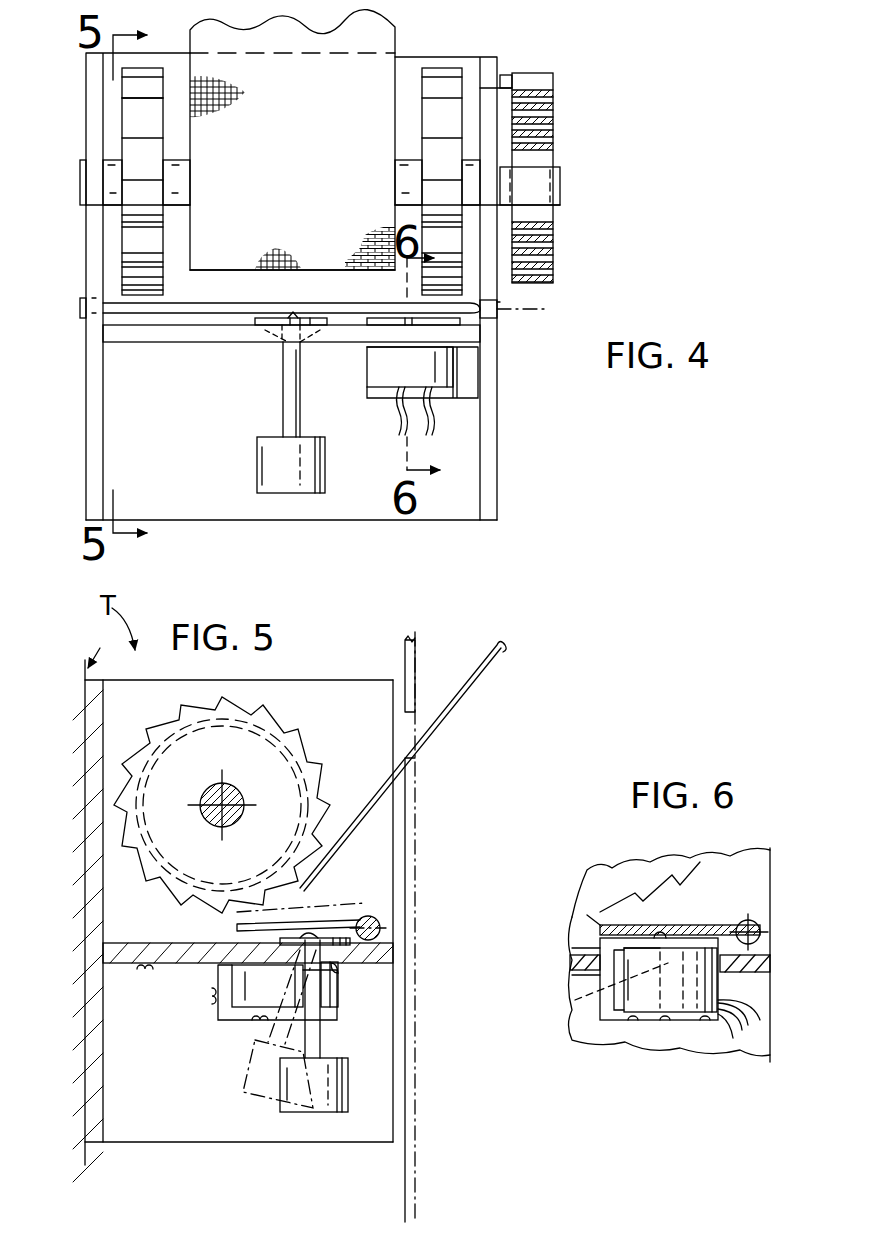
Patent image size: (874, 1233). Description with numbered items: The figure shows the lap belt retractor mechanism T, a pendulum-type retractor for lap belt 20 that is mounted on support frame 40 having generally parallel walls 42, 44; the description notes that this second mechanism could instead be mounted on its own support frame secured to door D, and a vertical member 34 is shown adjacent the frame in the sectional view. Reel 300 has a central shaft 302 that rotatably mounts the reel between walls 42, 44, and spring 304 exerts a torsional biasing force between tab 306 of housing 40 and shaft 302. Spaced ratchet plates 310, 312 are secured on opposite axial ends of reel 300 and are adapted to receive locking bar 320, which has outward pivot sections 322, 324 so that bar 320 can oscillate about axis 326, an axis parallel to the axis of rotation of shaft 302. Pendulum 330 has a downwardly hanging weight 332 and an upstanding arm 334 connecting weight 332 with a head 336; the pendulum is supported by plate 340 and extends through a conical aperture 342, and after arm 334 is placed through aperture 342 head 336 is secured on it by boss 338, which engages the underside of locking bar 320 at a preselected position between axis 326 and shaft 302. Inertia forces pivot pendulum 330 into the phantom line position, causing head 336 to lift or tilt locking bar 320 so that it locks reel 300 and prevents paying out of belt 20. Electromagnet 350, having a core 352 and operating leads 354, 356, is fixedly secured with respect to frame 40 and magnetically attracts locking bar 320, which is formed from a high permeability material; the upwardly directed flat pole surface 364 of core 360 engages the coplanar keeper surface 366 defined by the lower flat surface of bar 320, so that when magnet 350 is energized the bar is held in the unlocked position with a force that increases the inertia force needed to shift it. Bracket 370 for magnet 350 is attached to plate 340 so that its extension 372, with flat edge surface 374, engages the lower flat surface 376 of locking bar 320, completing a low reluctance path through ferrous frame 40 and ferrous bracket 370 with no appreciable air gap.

In FIG. 4, the lap belt 20 is at (394, 30).
In FIG. 5, the lap belt 20 is at (460, 680).
In FIG. 5, the vertical support member 34 is at (412, 760).
In FIG. 4, the support frame 40 is at (499, 500).
In FIG. 5, the support frame 40 is at (292, 682).
In FIG. 4, the wall 42 is at (495, 420).
In FIG. 5, the wall 42 is at (345, 682).
In FIG. 4, the wall 44 is at (100, 418).
In FIG. 4, the reel 300 is at (394, 82).
In FIG. 5, the reel 300 is at (172, 715).
In FIG. 4, the central shaft 302 is at (182, 183).
In FIG. 5, the central shaft 302 is at (208, 798).
In FIG. 4, the spring 304 is at (553, 127).
In FIG. 4, the tab 306 is at (505, 73).
In FIG. 4, the ratchet plate 310 is at (428, 158).
In FIG. 6, the ratchet plate 310 is at (697, 870).
In FIG. 4, the ratchet plate 312 is at (152, 126).
In FIG. 5, the ratchet plate 312 is at (303, 735).
In FIG. 4, the locking bar 320 is at (330, 310).
In FIG. 5, the locking bar 320 is at (237, 930).
In FIG. 6, the locking bar 320 is at (708, 928).
In FIG. 4, the outward pivot section 322 is at (500, 315).
In FIG. 4, the outward pivot section 324 is at (82, 310).
In FIG. 4, the axis 326 is at (540, 310).
In FIG. 5, the axis 326 is at (378, 920).
In FIG. 6, the axis 326 is at (762, 928).
In FIG. 4, the pendulum 330 is at (283, 402).
In FIG. 5, the pendulum 330 is at (322, 1040).
In FIG. 4, the weight 332 is at (305, 485).
In FIG. 5, the weight 332 is at (305, 1108).
In FIG. 4, the arm 334 is at (293, 378).
In FIG. 5, the arm 334 is at (328, 998).
In FIG. 4, the head 336 is at (273, 323).
In FIG. 5, the head 336 is at (330, 938).
In FIG. 4, the boss 338 is at (292, 316).
In FIG. 5, the boss 338 is at (310, 936).
In FIG. 4, the plate 340 is at (203, 345).
In FIG. 5, the plate 340 is at (190, 965).
In FIG. 6, the plate 340 is at (752, 968).
In FIG. 4, the conical aperture 342 is at (275, 355).
In FIG. 5, the conical aperture 342 is at (340, 972).
In FIG. 4, the electromagnet 350 is at (462, 372).
In FIG. 5, the electromagnet 350 is at (262, 1000).
In FIG. 6, the electromagnet 350 is at (632, 997).
In FIG. 6, the core 352 is at (697, 1015).
In FIG. 4, the operating lead 354 is at (396, 426).
In FIG. 6, the operating lead 354 is at (733, 1027).
In FIG. 4, the operating lead 356 is at (432, 397).
In FIG. 6, the operating lead 356 is at (737, 1040).
In FIG. 6, the core 360 is at (580, 996).
In FIG. 6, the flat pole surface 364 is at (672, 930).
In FIG. 6, the keeper surface 366 is at (658, 938).
In FIG. 4, the bracket 370 is at (422, 372).
In FIG. 5, the bracket 370 is at (218, 1018).
In FIG. 6, the bracket 370 is at (642, 1030).
In FIG. 6, the extension 372 is at (607, 953).
In FIG. 6, the flat edge surface 374 is at (598, 918).
In FIG. 6, the lower flat surface 376 is at (600, 948).
In FIG. 4, the retractor mechanism T is at (527, 53).
In FIG. 5, the door D is at (90, 901).